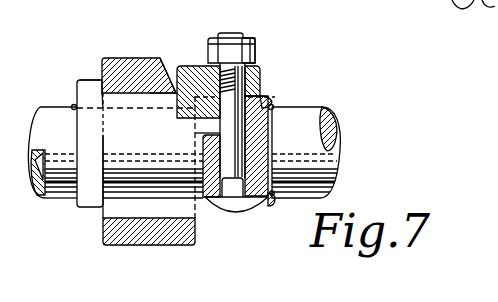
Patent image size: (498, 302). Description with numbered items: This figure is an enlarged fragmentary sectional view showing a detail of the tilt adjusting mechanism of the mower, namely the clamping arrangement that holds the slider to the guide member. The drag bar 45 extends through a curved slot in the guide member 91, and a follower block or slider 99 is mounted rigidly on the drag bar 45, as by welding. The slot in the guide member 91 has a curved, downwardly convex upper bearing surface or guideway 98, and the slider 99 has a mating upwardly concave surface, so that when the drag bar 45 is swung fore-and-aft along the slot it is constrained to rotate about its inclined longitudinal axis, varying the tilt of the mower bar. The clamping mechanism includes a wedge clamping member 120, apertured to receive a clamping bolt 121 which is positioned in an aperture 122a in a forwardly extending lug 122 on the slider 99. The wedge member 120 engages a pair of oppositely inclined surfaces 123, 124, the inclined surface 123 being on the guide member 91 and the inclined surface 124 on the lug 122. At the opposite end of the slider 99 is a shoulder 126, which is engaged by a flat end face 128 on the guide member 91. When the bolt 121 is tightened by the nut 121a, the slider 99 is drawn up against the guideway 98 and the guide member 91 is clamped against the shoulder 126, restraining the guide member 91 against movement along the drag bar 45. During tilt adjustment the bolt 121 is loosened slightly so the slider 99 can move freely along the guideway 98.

The drag bar 45 is at (63, 178).
The follower block or slider 99 is at (87, 100).
The guide member 91 is at (128, 68).
The inclined surface 123 is at (165, 57).
The upper bearing surface or guideway 98 is at (151, 95).
The shoulder 126 is at (103, 94).
The flat end face 128 is at (101, 86).
The wedge clamping member 120 is at (190, 75).
The clamping bolt 121 is at (234, 36).
The nut 121a is at (256, 51).
The inclined surface 124 is at (258, 93).
The aperture 122a is at (266, 131).
The forwardly extending lug 122 is at (254, 180).